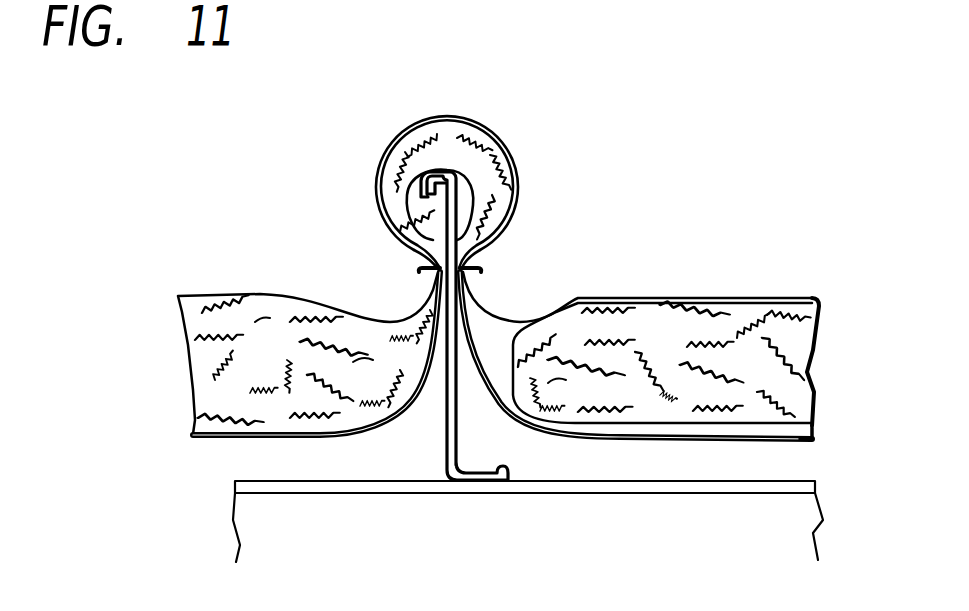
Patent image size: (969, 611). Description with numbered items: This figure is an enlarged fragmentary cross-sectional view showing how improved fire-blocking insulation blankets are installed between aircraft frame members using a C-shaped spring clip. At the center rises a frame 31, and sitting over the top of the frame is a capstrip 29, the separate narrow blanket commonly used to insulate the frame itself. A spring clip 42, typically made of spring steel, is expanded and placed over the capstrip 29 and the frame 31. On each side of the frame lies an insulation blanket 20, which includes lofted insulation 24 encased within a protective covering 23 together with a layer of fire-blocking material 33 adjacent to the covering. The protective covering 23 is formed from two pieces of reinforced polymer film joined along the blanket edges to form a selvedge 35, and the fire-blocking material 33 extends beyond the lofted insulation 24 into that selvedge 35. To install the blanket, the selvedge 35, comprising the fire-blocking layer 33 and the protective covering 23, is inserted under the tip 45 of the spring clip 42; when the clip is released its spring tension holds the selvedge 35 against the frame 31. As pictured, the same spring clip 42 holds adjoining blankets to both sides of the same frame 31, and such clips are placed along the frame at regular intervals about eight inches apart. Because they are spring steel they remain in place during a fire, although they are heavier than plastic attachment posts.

The insulation blanket 20 is at (536, 322).
The protective covering 23 is at (795, 300).
The lofted insulation 24 is at (798, 341).
The capstrip 29 is at (510, 183).
The frame 31 is at (447, 437).
The fire-blocking material 33 is at (797, 441).
The selvedge 35 is at (486, 289).
The spring clip 42 is at (471, 135).
The tip 45 is at (486, 252).